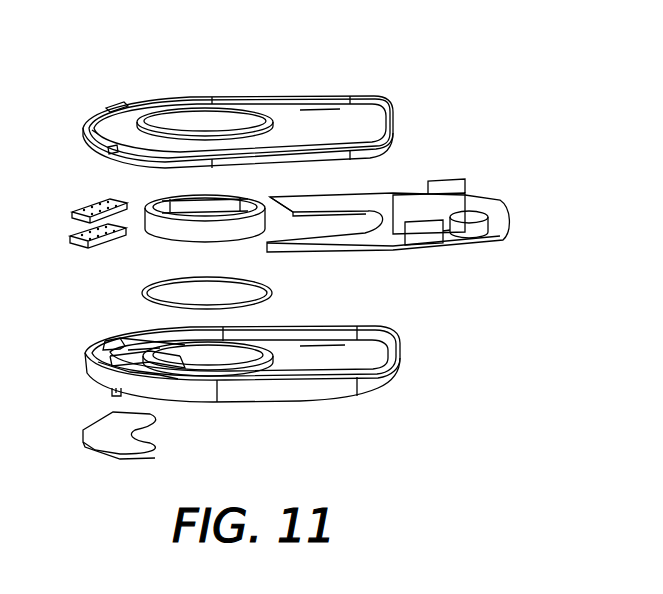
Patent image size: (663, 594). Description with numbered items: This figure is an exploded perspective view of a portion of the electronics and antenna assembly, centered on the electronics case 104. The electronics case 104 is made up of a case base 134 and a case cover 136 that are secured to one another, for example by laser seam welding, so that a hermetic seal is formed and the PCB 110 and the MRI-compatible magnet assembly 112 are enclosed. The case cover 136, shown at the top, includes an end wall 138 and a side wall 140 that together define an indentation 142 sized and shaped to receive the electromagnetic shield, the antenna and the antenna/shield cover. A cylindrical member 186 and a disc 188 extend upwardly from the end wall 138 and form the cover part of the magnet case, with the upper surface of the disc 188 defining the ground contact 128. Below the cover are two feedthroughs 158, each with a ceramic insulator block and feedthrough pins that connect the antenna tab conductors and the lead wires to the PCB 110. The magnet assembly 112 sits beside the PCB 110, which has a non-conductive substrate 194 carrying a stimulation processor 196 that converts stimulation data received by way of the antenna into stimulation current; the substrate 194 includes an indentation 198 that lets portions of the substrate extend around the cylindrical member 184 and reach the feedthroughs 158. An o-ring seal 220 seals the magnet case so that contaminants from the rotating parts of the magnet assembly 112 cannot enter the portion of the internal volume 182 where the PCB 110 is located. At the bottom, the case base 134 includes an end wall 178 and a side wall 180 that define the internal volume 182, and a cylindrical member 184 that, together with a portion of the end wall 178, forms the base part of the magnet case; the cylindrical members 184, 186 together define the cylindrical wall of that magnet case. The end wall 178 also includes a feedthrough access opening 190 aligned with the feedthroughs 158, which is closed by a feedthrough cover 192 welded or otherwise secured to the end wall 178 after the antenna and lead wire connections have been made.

The electronics case 104 is at (272, 58).
The case cover 136 is at (383, 90).
The side wall 140 is at (392, 113).
The end wall 138 is at (362, 128).
The indentation 142 is at (337, 134).
The ground contact 128 is at (224, 134).
The disc 188 is at (142, 112).
The cylindrical member 186 is at (90, 134).
The feedthrough 158 is at (86, 203).
The MRI-compatible magnet assembly 112 is at (188, 232).
The PCB 110 is at (380, 262).
The indentation 198 is at (362, 212).
The stimulation processor 196 is at (452, 203).
The non-conductive substrate 194 is at (498, 228).
The o-ring seal 220 is at (145, 290).
The case base 134 is at (393, 322).
The side wall 180 is at (396, 354).
The end wall 178 is at (370, 362).
The internal volume 182 is at (339, 372).
The cylindrical member 184 is at (265, 368).
The feedthrough access opening 190 is at (112, 348).
The feedthrough cover 192 is at (88, 420).